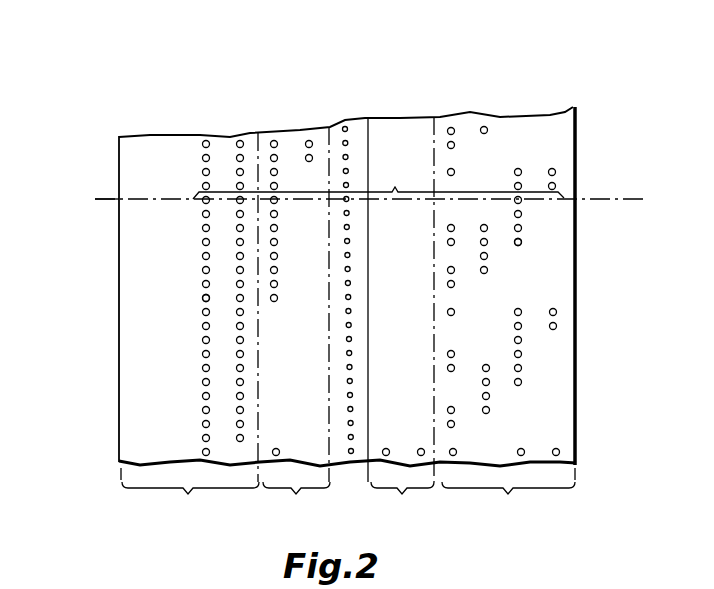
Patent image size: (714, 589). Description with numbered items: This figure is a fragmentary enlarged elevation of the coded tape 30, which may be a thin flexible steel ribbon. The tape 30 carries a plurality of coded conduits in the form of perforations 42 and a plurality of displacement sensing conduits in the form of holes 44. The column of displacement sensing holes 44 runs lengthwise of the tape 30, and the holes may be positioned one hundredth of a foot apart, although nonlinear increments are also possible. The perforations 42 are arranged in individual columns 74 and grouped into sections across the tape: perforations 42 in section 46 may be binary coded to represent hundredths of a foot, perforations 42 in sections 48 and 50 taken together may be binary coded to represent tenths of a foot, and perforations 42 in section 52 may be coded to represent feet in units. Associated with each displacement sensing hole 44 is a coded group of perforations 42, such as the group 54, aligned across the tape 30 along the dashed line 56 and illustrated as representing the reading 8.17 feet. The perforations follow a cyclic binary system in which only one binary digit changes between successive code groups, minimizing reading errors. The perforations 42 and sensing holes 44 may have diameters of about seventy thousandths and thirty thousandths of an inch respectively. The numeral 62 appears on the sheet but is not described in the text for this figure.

The tape 30 is at (577, 405).
The perforations 42 is at (203, 298).
The displacement sensing holes 44 is at (349, 213).
The section 46 is at (508, 502).
The section 48 is at (401, 321).
The section 50 is at (296, 327).
The section 52 is at (190, 330).
The coded group of perforations 54 is at (378, 179).
The dashed line 56 is at (583, 197).
The columns 74 is at (596, 102).
The sheet number 62 is at (444, 578).
The dimension 8.17 is at (80, 203).